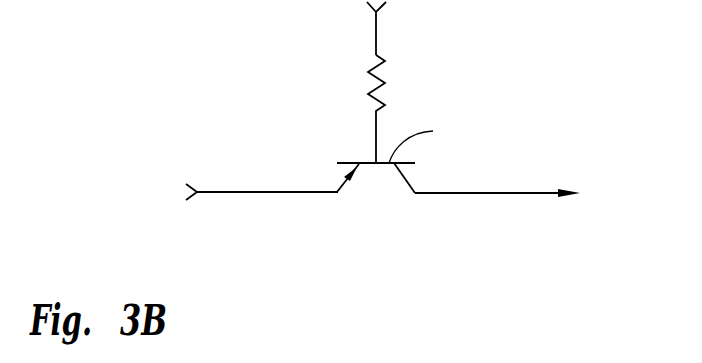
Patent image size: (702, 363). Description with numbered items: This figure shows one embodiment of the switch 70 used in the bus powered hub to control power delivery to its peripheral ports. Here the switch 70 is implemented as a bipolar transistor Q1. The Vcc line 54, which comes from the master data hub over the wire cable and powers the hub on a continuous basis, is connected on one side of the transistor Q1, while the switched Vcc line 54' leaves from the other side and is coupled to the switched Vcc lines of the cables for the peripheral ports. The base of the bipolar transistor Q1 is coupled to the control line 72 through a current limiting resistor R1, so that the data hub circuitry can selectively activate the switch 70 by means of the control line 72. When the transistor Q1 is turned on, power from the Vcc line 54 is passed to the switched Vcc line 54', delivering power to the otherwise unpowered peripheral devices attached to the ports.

The control line 72 is at (377, 36).
The switch 70 is at (362, 192).
The Vcc line 54 is at (262, 201).
The switched Vcc line 54' is at (497, 226).
The current limiting resistor R1 is at (393, 109).
The bipolar transistor Q1 is at (398, 157).